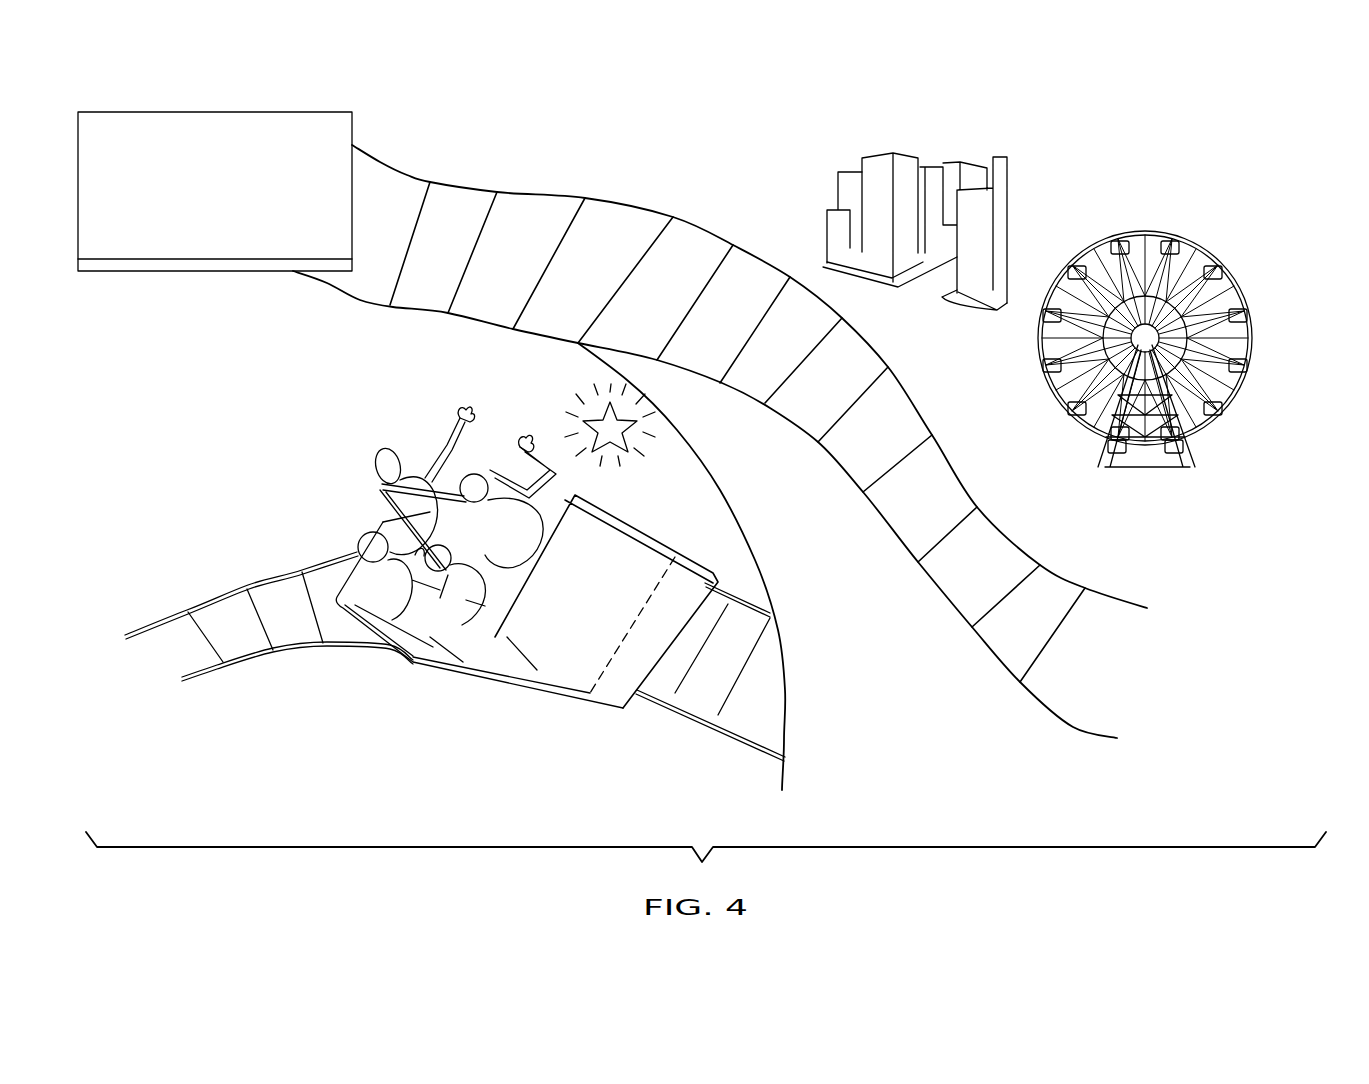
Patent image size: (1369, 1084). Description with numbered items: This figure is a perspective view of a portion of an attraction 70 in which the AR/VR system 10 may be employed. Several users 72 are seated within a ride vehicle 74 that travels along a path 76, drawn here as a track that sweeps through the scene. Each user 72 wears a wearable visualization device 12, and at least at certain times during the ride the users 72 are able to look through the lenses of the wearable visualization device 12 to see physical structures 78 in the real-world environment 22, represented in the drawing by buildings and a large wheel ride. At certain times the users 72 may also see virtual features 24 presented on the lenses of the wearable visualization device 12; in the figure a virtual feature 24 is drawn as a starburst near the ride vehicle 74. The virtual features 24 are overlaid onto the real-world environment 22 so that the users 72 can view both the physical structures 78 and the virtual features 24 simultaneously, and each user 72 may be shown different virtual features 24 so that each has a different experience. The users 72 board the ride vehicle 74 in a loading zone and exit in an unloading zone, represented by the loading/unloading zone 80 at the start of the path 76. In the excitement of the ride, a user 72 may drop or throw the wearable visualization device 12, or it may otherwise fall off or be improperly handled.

The AR/VR system 10 is at (285, 390).
The wearable visualization device 12 is at (413, 453).
The real-world environment 22 is at (1190, 497).
The virtual features 24 is at (613, 452).
The attraction 70 is at (1163, 177).
The users 72 is at (380, 460).
The ride vehicle 74 is at (628, 540).
The path 76 is at (692, 715).
The physical structures 78 is at (878, 163).
The loading/unloading zone 80 is at (217, 112).